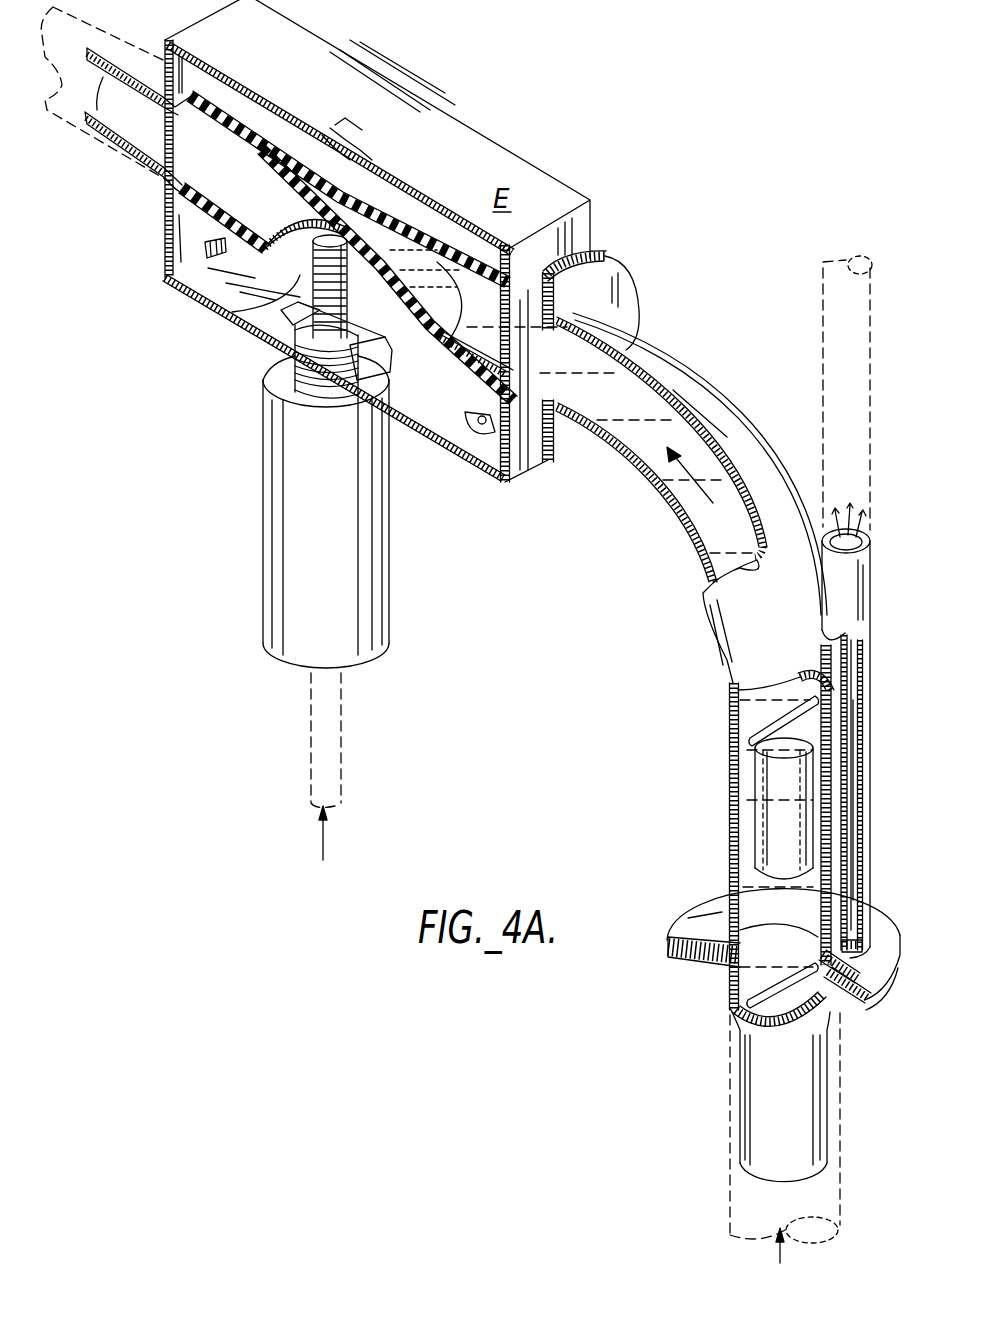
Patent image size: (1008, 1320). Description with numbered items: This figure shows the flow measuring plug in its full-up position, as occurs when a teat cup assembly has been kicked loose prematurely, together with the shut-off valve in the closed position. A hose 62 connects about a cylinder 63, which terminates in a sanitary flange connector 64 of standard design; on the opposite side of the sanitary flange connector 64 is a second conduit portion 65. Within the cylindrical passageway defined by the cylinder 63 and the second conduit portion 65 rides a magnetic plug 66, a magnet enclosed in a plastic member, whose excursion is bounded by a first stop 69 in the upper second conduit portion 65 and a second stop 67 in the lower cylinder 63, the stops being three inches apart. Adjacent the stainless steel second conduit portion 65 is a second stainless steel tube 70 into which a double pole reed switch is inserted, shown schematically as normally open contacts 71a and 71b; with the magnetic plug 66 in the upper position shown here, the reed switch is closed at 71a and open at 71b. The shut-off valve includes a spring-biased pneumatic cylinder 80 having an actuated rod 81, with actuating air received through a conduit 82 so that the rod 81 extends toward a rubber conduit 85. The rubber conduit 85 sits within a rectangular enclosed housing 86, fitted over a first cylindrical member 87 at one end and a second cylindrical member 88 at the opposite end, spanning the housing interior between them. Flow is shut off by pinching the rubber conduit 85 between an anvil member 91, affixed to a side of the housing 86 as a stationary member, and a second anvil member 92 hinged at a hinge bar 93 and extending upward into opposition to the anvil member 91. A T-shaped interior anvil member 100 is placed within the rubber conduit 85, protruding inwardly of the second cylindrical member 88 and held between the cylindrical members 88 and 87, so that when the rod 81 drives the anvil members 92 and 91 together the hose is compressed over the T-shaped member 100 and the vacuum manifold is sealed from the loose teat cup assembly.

The hose 62 is at (728, 1150).
The cylinder 63 is at (775, 1090).
The sanitary flange connector 64 is at (690, 923).
The second conduit portion 65 is at (732, 818).
The magnetic plug 66 is at (777, 783).
The second stop 67 is at (760, 993).
The first stop 69 is at (762, 720).
The second stainless steel tube 70 is at (870, 572).
The reed switch contact 71a is at (842, 818).
The reed switch contact 71b is at (843, 937).
The spring-biased pneumatic cylinder 80 is at (272, 554).
The actuated rod 81 is at (300, 328).
The conduit 82 is at (310, 757).
The rubber conduit 85 is at (203, 223).
The housing 86 is at (560, 196).
The first cylindrical member 87 is at (531, 356).
The second cylindrical member 88 is at (180, 186).
The anvil member 91 is at (350, 168).
The second anvil member 92 is at (232, 311).
The hinge bar 93 is at (480, 420).
The T-shaped interior anvil member 100 is at (280, 182).